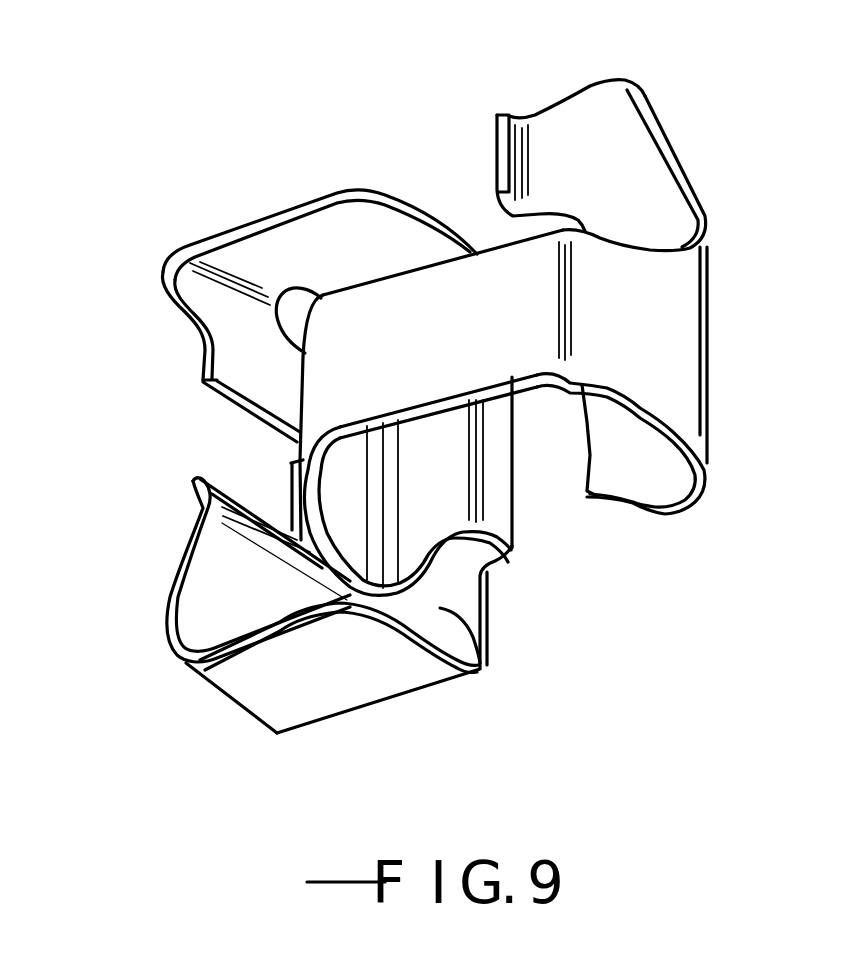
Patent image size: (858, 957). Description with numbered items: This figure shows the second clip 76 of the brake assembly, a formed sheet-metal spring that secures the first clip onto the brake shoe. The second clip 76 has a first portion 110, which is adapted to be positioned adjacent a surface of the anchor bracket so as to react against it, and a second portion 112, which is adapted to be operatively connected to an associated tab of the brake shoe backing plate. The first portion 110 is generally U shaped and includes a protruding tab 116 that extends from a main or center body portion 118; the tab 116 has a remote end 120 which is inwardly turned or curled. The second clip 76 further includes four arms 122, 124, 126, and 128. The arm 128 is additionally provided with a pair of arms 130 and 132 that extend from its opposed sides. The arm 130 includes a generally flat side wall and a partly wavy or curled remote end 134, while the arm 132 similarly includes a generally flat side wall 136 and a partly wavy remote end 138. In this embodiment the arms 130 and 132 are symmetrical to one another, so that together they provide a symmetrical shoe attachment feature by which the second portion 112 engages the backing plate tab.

The second clip 76 is at (240, 167).
The first portion 110 is at (688, 175).
The second portion 112 is at (181, 675).
The protruding tab 116 is at (617, 100).
The main or center body portion 118 is at (637, 435).
The remote end 120 is at (517, 120).
The arm 122 is at (663, 285).
The arm 124 is at (503, 284).
The arm 126 is at (479, 520).
The arm 128 is at (484, 668).
The arm 130 is at (241, 705).
The arm 132 is at (302, 202).
The remote end 134 is at (208, 590).
The side wall 136 is at (373, 223).
The remote end 138 is at (233, 368).